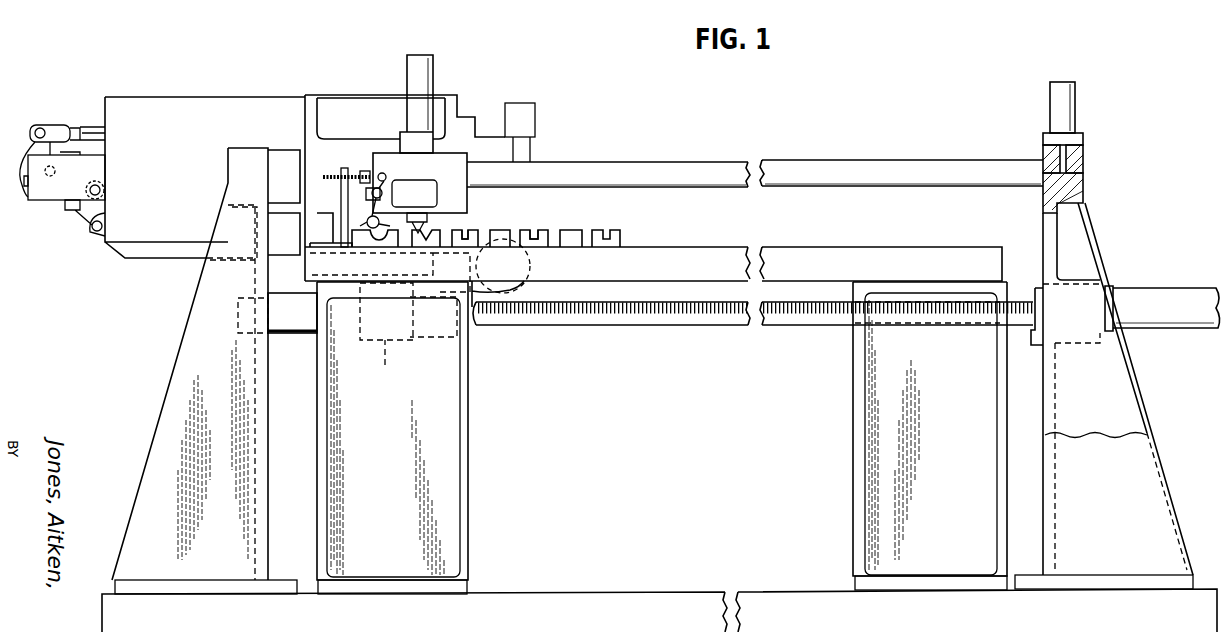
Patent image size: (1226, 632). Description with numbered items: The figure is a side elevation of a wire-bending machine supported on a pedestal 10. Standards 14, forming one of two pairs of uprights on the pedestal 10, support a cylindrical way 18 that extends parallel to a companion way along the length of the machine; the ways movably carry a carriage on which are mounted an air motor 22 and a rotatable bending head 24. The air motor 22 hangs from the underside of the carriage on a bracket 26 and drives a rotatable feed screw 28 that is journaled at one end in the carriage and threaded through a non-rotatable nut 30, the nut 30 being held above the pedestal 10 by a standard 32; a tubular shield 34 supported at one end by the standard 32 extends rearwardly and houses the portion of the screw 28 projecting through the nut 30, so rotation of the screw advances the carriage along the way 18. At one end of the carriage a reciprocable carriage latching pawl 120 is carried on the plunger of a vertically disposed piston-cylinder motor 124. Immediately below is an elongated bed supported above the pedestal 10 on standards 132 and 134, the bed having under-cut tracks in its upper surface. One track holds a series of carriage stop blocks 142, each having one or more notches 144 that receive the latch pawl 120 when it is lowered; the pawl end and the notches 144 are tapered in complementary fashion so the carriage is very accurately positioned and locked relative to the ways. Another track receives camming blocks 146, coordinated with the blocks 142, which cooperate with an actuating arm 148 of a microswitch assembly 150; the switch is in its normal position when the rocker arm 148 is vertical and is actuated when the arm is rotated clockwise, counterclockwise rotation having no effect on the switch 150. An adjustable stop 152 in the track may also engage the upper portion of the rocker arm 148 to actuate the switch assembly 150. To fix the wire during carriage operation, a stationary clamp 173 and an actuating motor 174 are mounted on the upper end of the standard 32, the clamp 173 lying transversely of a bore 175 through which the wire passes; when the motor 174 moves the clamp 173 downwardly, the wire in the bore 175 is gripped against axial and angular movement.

The pedestal 10 is at (531, 612).
The standards 14 is at (165, 460).
The cylindrical way 18 is at (626, 173).
The air motor 22 is at (303, 332).
The rotatable bending head 24 is at (183, 97).
The bracket 26 is at (386, 355).
The feed screw 28 is at (633, 326).
The non-rotatable nut 30 is at (1037, 292).
The standard 32 is at (1073, 395).
The tubular shield 34 is at (1167, 303).
The carriage latching pawl 120 is at (430, 223).
The piston-cylinder motor 124 is at (423, 85).
The standard 132 is at (387, 467).
The standard 134 is at (922, 488).
The carriage stop blocks 142 is at (434, 243).
The notches 144 is at (553, 232).
The camming blocks 146 is at (512, 235).
The actuating arm 148 is at (384, 196).
The microswitch assembly 150 is at (430, 203).
The adjustable stop 152 is at (362, 172).
The stationary clamp 173 is at (1067, 157).
The actuating motor 174 is at (1058, 118).
The bore 175 is at (1082, 168).